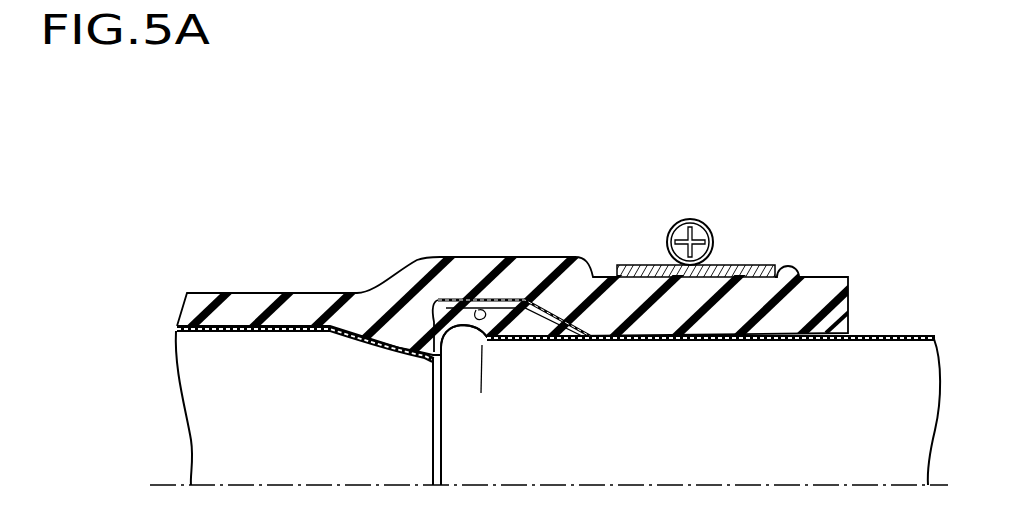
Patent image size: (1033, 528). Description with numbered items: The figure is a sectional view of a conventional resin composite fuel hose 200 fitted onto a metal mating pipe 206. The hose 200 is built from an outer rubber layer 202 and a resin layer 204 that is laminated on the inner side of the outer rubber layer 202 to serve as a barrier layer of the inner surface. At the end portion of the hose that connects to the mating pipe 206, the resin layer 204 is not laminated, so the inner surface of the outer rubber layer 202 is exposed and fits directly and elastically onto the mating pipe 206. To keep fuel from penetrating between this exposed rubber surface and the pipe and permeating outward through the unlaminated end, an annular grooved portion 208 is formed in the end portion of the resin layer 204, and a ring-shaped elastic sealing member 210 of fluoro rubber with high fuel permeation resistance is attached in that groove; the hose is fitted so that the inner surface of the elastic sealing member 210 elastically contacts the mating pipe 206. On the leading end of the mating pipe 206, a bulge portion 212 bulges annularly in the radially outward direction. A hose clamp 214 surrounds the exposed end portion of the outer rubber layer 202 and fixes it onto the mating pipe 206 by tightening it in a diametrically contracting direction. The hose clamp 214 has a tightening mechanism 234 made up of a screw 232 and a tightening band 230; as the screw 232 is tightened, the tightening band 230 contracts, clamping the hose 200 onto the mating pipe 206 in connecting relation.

The resin composite fuel hose 200 is at (421, 226).
The outer rubber layer 202 is at (240, 307).
The resin layer 204 is at (228, 335).
The mating pipe 206 is at (914, 325).
The annular grooved portion 208 is at (500, 298).
The elastic sealing member 210 is at (522, 322).
The bulge portion 212 is at (436, 319).
The hose clamp 214 is at (735, 182).
The tightening band 230 is at (752, 262).
The screw 232 is at (705, 221).
The tightening mechanism 234 is at (670, 219).